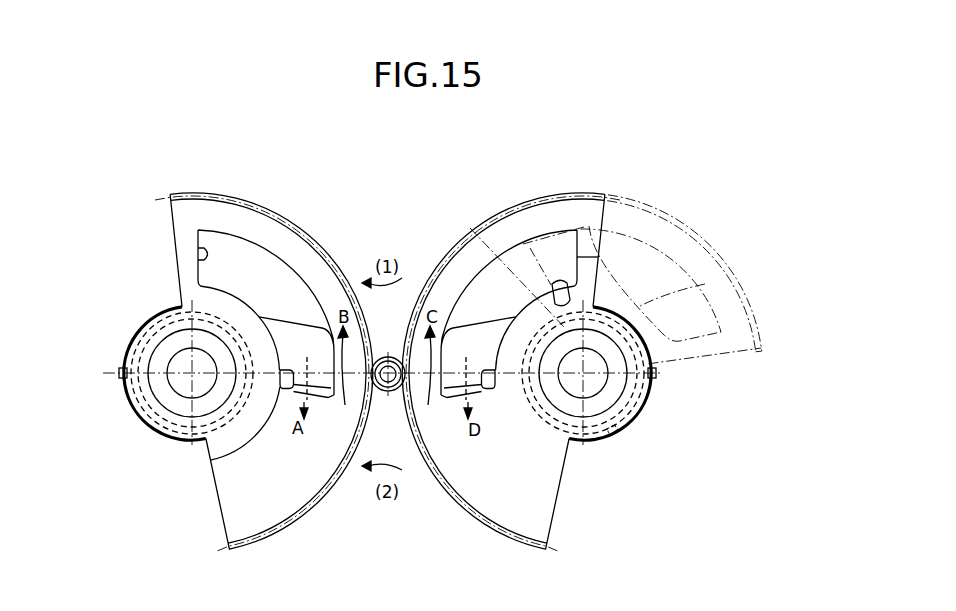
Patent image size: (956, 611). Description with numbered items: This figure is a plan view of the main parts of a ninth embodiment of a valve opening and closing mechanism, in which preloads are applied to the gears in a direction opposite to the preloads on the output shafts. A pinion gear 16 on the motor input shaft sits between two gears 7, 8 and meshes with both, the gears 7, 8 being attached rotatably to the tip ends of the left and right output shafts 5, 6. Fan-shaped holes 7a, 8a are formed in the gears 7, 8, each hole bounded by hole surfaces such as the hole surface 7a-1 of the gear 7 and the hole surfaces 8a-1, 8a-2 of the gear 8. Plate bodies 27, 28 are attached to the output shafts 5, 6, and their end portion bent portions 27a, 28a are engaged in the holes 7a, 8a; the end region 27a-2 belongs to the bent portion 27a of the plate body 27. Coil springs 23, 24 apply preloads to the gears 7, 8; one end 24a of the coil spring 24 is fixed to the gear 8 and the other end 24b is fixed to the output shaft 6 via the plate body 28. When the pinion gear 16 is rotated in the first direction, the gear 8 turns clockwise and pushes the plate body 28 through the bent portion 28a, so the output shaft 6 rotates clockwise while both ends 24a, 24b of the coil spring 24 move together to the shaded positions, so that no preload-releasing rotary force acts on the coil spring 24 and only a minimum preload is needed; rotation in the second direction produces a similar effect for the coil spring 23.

The output shaft 5 is at (174, 384).
The output shaft 6 is at (598, 383).
The gear 7 is at (172, 222).
The fan-shaped hole 7a is at (253, 257).
The hole surface 7a-1 is at (200, 258).
The gear 8 is at (590, 218).
The fan-shaped hole 8a is at (517, 258).
The hole surface 8a-1 is at (590, 259).
The hole surface 8a-2 is at (443, 397).
The pinion gear 16 is at (386, 357).
The coil spring 23 is at (166, 425).
The coil spring 24 is at (613, 430).
The one end of coil spring 24a is at (470, 228).
The other end of coil spring 24b is at (658, 374).
The plate body 27 is at (140, 330).
The end portion bent portion 27a is at (209, 463).
The tip of arm of first hub 27a-2 is at (328, 397).
The plate body 28 is at (705, 284).
The end portion bent portion 28a is at (497, 390).